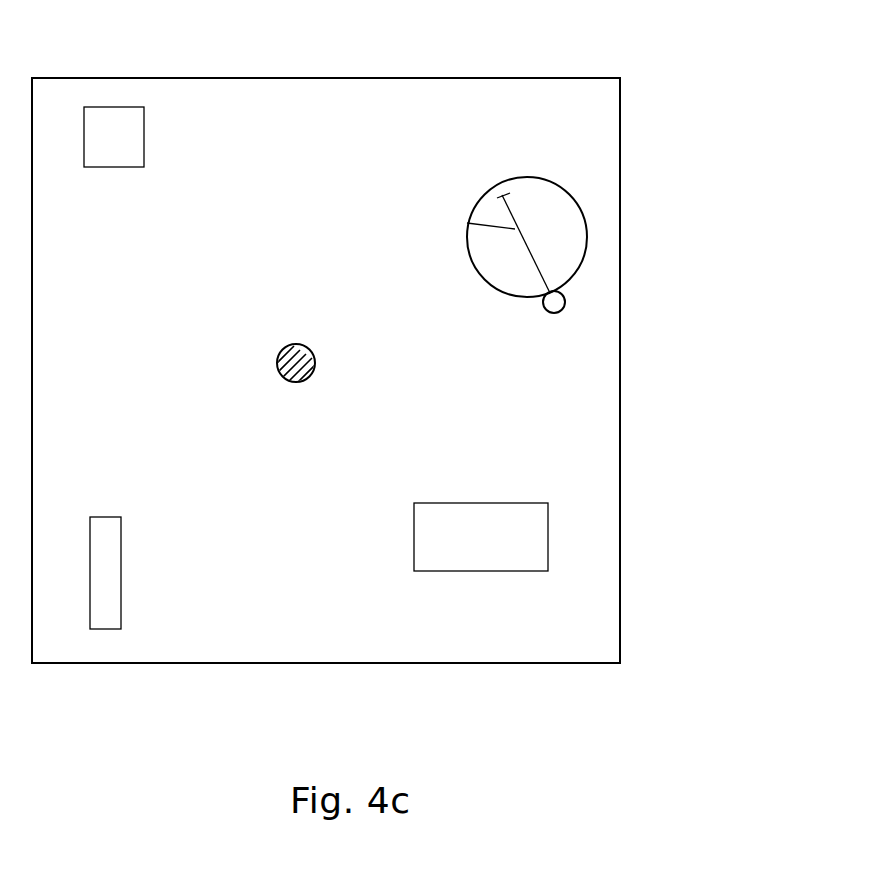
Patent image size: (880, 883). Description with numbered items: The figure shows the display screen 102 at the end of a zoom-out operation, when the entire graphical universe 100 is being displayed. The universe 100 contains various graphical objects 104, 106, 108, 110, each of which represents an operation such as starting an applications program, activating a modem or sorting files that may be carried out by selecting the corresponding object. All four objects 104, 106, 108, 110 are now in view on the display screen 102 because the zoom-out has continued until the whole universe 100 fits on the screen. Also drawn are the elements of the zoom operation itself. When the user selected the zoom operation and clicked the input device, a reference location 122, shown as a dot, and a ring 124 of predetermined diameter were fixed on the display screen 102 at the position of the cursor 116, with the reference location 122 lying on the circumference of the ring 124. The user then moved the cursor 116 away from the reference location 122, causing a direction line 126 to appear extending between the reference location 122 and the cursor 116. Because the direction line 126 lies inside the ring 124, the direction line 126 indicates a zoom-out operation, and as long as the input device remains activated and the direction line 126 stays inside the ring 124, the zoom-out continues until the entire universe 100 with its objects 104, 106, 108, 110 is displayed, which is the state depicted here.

The graphical universe 100 is at (137, 328).
The display screen 102 is at (620, 578).
The graphical object 104 is at (144, 145).
The graphical object 106 is at (316, 357).
The graphical object 108 is at (490, 577).
The graphical object 110 is at (121, 608).
The cursor 116 is at (503, 192).
The reference location 122 is at (563, 293).
The ring 124 is at (538, 173).
The direction line 126 is at (467, 223).